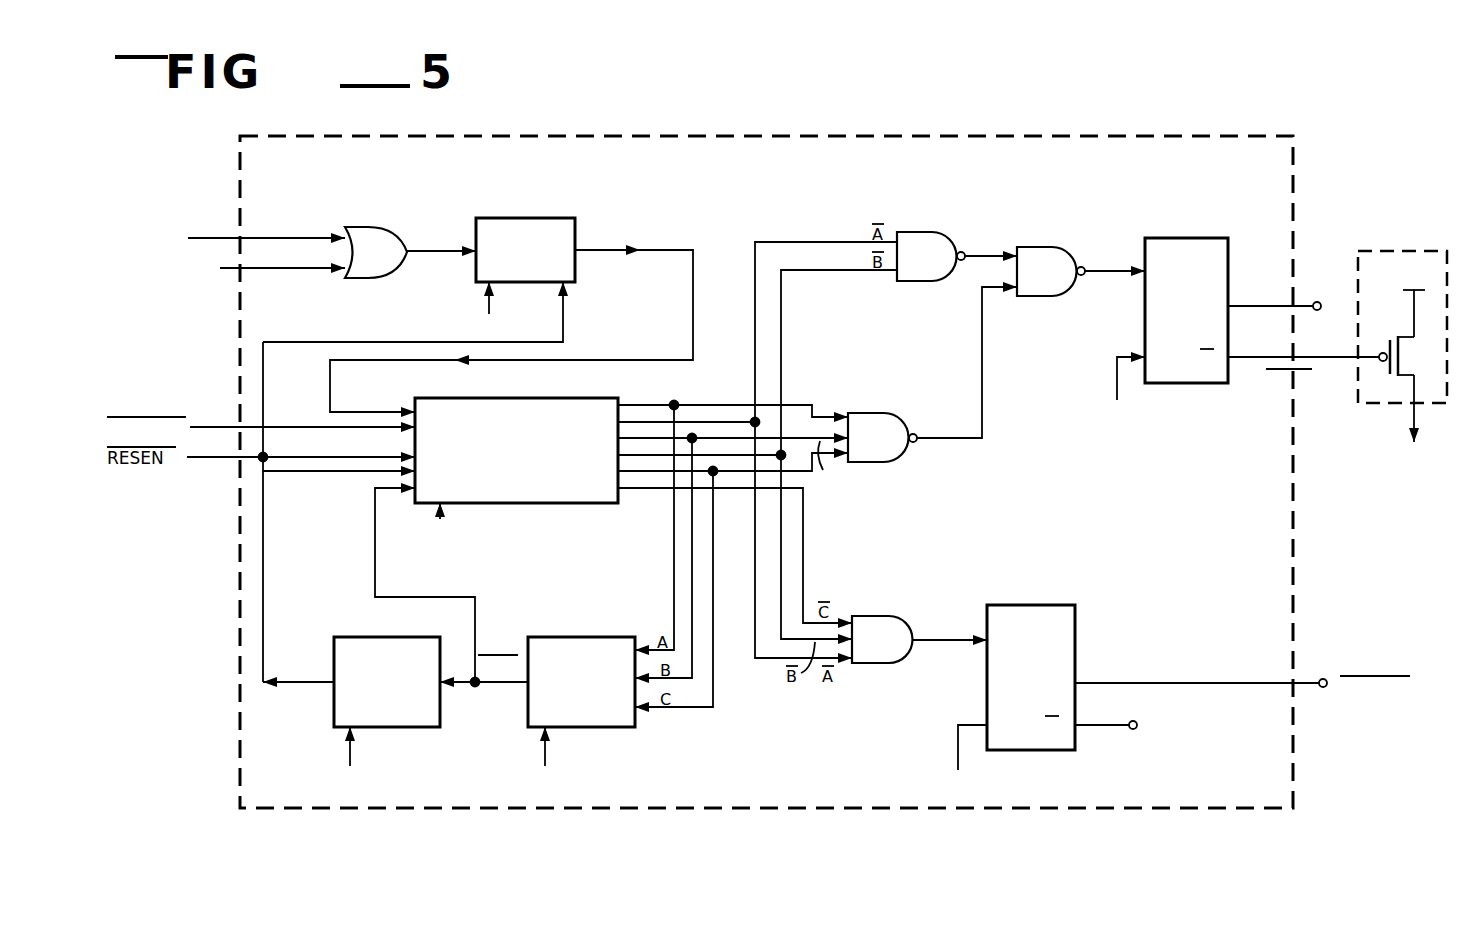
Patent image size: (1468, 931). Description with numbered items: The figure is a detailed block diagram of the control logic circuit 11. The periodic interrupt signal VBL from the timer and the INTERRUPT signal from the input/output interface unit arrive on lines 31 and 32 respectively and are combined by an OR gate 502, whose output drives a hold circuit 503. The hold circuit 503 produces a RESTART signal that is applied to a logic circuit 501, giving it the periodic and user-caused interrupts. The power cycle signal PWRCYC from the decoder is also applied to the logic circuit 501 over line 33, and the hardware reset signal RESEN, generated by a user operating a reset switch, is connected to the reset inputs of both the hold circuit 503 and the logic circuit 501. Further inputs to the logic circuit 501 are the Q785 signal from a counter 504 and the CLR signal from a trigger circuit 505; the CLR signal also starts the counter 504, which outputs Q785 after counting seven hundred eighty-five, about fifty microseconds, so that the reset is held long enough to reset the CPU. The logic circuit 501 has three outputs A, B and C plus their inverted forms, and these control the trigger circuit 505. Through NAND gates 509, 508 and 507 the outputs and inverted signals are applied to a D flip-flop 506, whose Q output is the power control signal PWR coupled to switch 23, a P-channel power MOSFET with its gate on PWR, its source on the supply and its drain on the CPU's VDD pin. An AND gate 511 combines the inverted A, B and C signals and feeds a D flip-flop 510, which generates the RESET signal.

The control logic circuit 11 is at (897, 134).
The switch 23 is at (1400, 250).
The line 31 is at (290, 237).
The line 32 is at (280, 269).
The power cycle input line 33 is at (218, 425).
The logic circuit 501 is at (500, 482).
The OR gate 502 is at (396, 265).
The hold circuit 503 is at (560, 218).
The counter 504 is at (370, 717).
The trigger circuit 505 is at (607, 637).
The D flip-flop 506 is at (1200, 238).
The NAND gate 507 is at (1062, 283).
The NAND gate 508 is at (942, 268).
The NAND gate 509 is at (893, 451).
The D flip-flop 510 is at (1057, 605).
The AND gate 511 is at (897, 652).